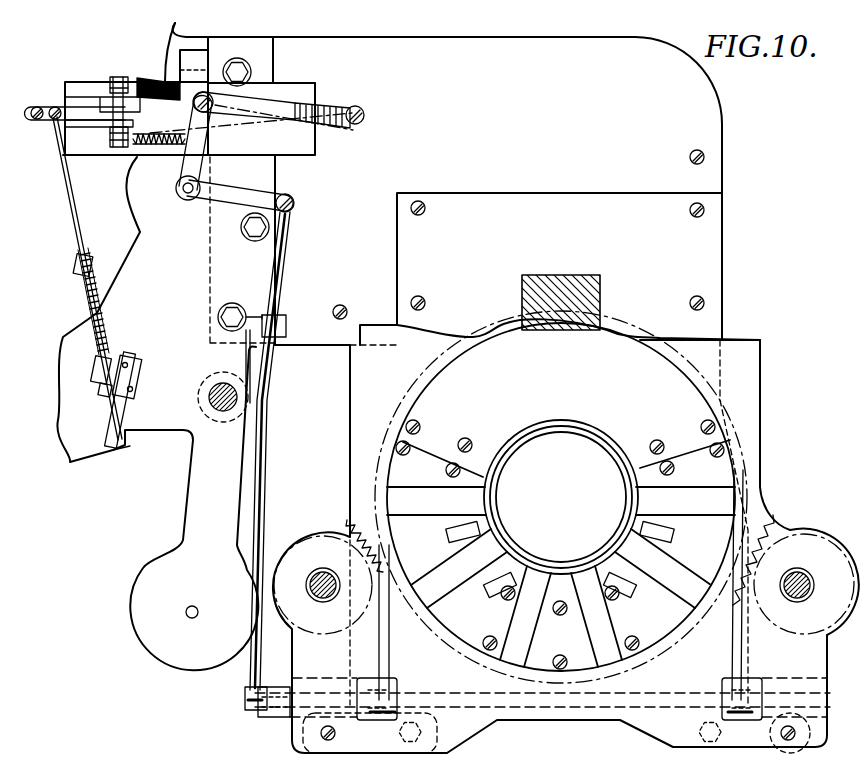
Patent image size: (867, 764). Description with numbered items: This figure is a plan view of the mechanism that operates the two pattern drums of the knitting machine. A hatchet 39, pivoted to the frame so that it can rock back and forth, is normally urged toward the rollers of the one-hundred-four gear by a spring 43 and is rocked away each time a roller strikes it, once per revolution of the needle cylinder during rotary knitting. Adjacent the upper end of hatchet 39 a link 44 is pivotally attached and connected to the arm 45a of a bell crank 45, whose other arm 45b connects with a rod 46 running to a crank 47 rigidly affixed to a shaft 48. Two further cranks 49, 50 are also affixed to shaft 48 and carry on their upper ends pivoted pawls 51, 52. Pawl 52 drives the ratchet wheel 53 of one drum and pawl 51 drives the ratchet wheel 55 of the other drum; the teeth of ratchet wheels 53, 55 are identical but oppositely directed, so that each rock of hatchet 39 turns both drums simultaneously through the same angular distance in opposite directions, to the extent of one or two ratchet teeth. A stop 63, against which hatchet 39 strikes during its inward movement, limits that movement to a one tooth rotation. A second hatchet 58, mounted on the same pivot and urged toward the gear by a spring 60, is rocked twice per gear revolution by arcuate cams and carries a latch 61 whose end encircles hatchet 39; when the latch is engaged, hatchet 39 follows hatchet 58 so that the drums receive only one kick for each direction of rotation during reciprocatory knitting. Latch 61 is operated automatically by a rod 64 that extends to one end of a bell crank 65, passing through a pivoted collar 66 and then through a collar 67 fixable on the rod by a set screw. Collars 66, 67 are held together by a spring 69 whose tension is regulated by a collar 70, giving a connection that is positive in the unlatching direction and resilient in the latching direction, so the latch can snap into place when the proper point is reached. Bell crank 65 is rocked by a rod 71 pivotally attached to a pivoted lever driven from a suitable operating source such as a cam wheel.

The hatchet 39 is at (110, 86).
The spring 43 is at (328, 108).
The link 44 is at (170, 133).
The bell crank 45 is at (186, 198).
The arm 45a is at (191, 162).
The arm 45b is at (266, 195).
The rod 46 is at (270, 419).
The crank 47 is at (265, 716).
The shaft 48 is at (478, 696).
The crank 49 is at (372, 722).
The crank 50 is at (740, 712).
The pawl 51 is at (391, 650).
The pawl 52 is at (733, 661).
The ratchet wheel 53 is at (806, 542).
The ratchet wheel 55 is at (312, 543).
The second hatchet 58 is at (107, 133).
The spring 60 is at (333, 122).
The latch 61 is at (77, 112).
The stop 63 is at (272, 87).
The rod 64 is at (72, 203).
The bell crank 65 is at (130, 414).
The pivoted collar 66 is at (94, 372).
The collar 67 is at (99, 395).
The spring 69 is at (100, 324).
The collar 70 is at (77, 268).
The rod 71 is at (124, 452).